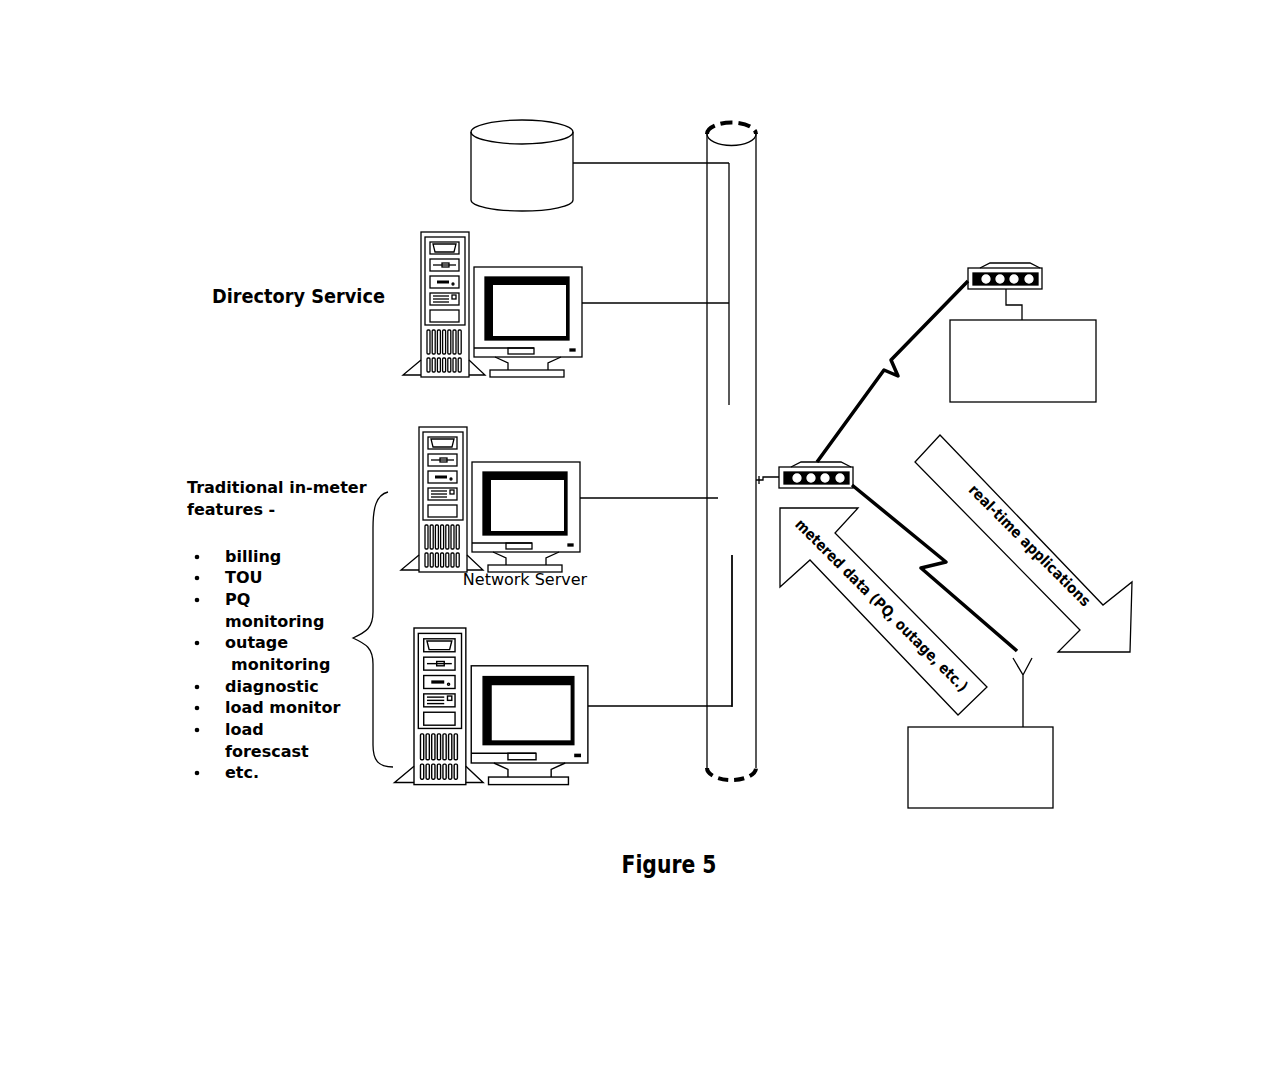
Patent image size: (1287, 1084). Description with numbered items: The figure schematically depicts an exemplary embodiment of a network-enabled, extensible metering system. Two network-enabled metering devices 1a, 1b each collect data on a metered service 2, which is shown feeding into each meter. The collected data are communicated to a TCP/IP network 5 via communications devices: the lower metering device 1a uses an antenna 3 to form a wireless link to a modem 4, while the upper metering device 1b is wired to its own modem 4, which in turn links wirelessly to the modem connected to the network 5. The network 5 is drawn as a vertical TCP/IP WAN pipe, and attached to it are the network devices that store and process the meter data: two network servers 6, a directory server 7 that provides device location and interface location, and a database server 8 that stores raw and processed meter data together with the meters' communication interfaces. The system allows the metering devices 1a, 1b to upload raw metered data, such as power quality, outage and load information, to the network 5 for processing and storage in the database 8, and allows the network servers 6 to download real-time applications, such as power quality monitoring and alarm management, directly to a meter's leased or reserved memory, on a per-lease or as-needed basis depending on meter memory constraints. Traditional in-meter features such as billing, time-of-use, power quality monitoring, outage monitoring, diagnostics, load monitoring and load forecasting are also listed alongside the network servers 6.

The metering device 1a is at (980, 767).
The metering device 1b is at (1023, 361).
The metered service 2 is at (1110, 353).
The antenna 3 is at (1023, 703).
The modem 4 is at (1043, 279).
The TCP/IP network 5 is at (758, 622).
The network server 6 is at (528, 667).
The directory server 7 is at (528, 267).
The database server 8 is at (523, 133).